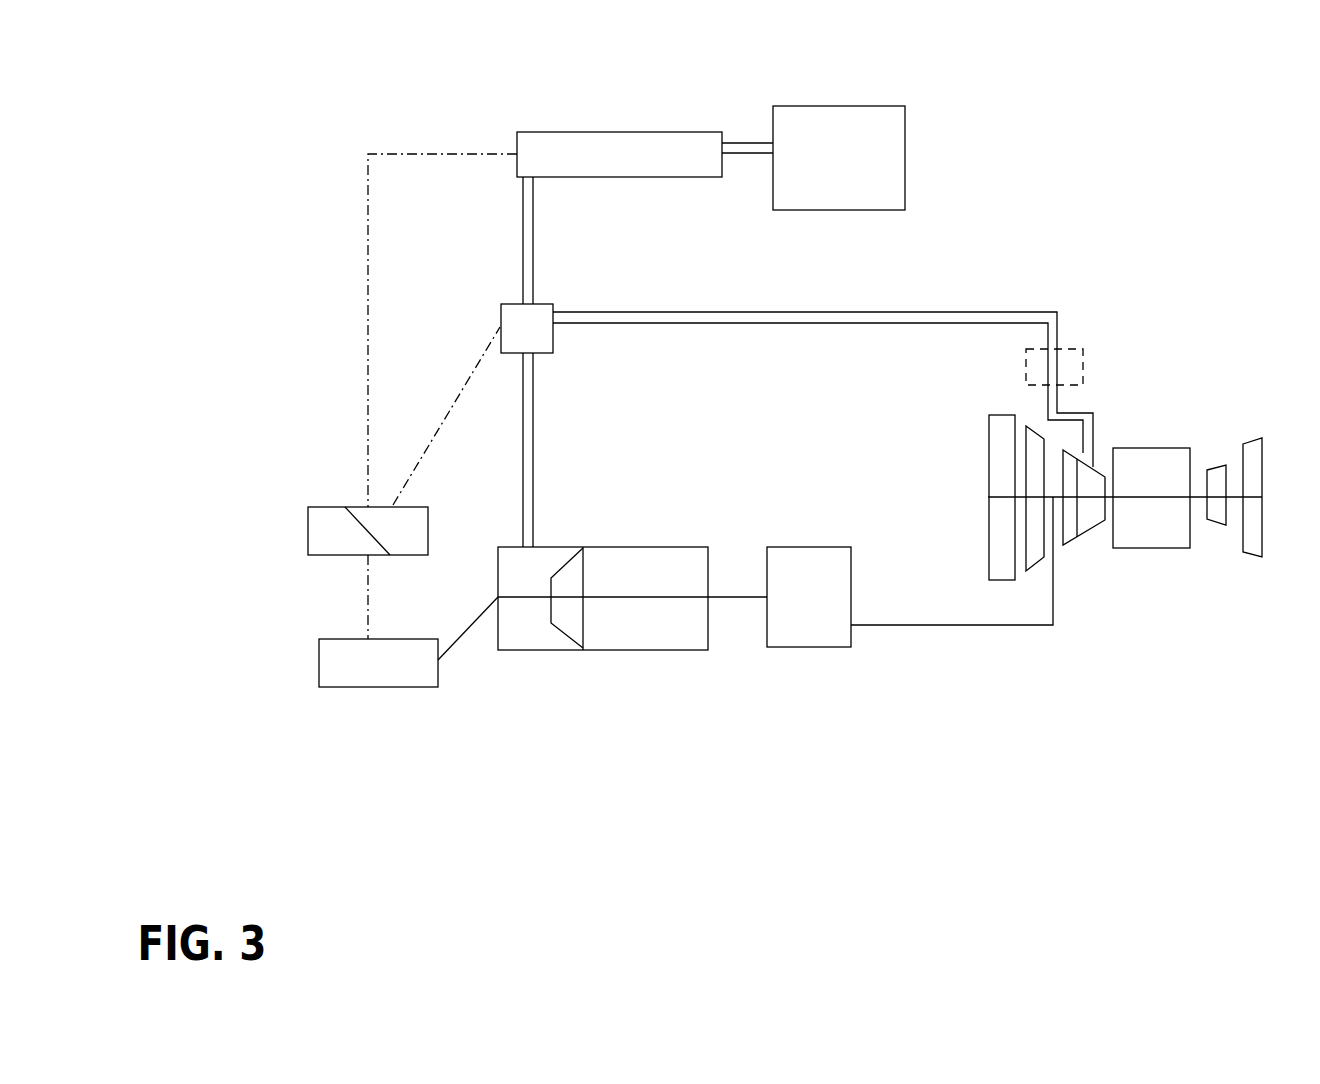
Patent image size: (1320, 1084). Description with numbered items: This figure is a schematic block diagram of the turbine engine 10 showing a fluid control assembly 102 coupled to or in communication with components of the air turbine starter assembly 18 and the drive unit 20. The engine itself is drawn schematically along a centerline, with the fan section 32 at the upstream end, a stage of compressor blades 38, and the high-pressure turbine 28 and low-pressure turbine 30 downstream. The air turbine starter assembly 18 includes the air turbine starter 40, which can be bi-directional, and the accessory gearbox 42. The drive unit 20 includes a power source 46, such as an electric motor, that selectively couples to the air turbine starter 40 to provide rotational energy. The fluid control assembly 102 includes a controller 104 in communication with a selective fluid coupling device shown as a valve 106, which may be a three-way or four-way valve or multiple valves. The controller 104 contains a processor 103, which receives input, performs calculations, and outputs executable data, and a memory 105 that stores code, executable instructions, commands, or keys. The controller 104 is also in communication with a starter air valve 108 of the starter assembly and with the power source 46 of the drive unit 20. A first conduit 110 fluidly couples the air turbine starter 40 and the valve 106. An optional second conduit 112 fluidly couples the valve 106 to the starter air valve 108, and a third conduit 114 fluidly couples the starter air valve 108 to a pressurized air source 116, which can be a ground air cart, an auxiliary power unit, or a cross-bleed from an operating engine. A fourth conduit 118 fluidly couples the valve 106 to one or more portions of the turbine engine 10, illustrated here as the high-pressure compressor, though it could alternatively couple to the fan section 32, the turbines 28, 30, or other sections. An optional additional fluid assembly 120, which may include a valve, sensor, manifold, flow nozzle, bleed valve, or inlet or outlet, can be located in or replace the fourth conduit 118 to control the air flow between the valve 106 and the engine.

The turbine engine 10 is at (1120, 697).
The air turbine starter assembly 18 is at (704, 672).
The drive unit 20 is at (277, 679).
The high-pressure turbine 28 is at (1215, 523).
The low-pressure turbine 30 is at (1254, 555).
The fan section 32 is at (988, 550).
The circumferentially spaced blades 38 is at (1093, 527).
The air turbine starter 40 is at (629, 654).
The accessory gearbox 42 is at (825, 648).
The power source 46 is at (360, 688).
The fluid control assembly 102 is at (306, 486).
The processor 103 is at (321, 546).
The controller 104 is at (306, 528).
The memory 105 is at (384, 533).
The valve 106 is at (545, 304).
The starter air valve 108 is at (636, 131).
The first conduit 110 is at (535, 497).
The second conduit 112 is at (535, 240).
The third conduit 114 is at (745, 143).
The pressurized air source 116 is at (855, 106).
The fourth conduit 118 is at (893, 311).
The additional fluid assembly 120 is at (1073, 343).